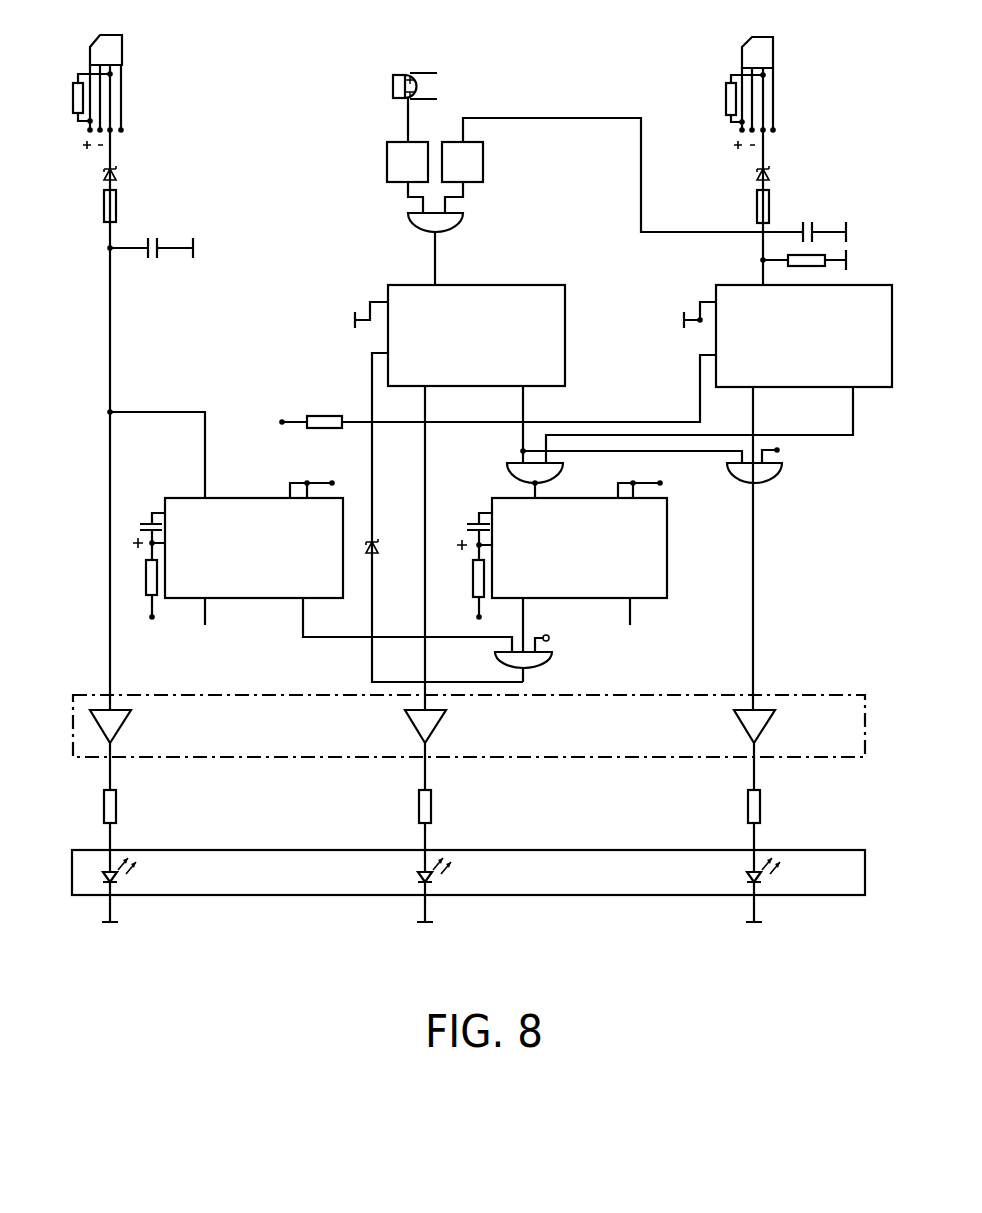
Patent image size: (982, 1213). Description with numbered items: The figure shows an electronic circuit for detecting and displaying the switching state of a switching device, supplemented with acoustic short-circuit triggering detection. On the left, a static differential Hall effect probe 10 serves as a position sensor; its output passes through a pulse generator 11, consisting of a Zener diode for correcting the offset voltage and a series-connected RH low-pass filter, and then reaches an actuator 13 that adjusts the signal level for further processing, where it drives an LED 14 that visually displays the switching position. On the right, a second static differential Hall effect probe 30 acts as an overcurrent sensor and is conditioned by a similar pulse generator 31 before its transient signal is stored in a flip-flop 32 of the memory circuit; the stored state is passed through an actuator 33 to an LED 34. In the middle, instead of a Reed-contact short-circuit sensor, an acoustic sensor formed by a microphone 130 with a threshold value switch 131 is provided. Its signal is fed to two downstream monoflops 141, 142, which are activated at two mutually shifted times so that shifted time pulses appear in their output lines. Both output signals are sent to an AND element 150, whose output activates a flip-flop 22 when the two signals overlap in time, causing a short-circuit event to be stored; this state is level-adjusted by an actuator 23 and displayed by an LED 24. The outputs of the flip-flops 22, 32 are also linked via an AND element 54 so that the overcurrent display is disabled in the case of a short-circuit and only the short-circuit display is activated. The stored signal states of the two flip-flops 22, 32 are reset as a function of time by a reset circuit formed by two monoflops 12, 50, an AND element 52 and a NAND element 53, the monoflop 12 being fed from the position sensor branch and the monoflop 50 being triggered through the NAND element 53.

The static differential Hall effect probe 10 is at (122, 48).
The pulse generator 11 is at (123, 230).
The monoflop 12 is at (257, 498).
The actuator 13 is at (123, 728).
The LED 14 is at (117, 880).
The flip-flop 22 is at (565, 320).
The actuator 23 is at (438, 728).
The LED 24 is at (418, 880).
The static differential Hall effect probe 30 is at (773, 50).
The pulse generator 31 is at (770, 175).
The flip-flop 32 is at (716, 285).
The actuator 33 is at (767, 728).
The LED 34 is at (747, 880).
The monoflop 50 is at (667, 545).
The AND element 52 is at (552, 660).
The NAND element 53 is at (507, 478).
The AND element 54 is at (782, 478).
The microphone 130 is at (371, 71).
The threshold value switch 131 is at (407, 72).
The monoflop 141 is at (387, 160).
The monoflop 142 is at (483, 155).
The AND element 150 is at (408, 218).